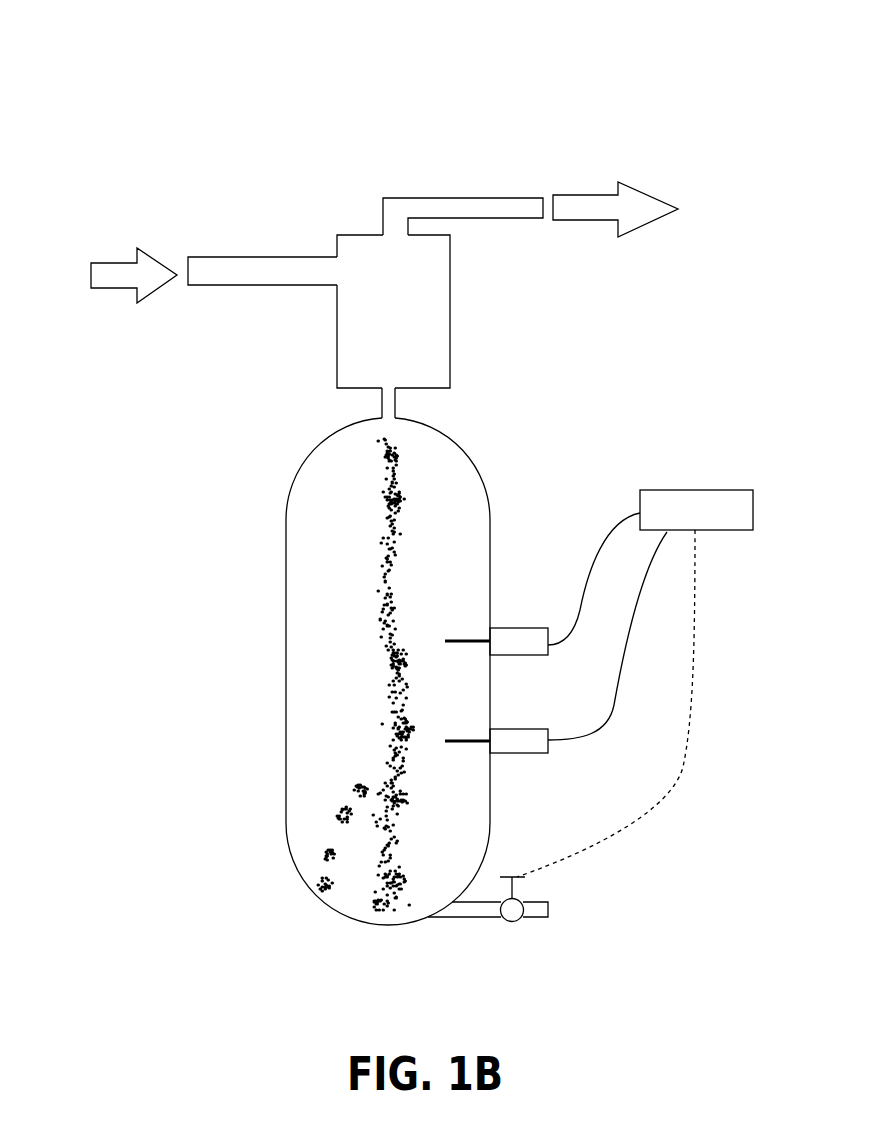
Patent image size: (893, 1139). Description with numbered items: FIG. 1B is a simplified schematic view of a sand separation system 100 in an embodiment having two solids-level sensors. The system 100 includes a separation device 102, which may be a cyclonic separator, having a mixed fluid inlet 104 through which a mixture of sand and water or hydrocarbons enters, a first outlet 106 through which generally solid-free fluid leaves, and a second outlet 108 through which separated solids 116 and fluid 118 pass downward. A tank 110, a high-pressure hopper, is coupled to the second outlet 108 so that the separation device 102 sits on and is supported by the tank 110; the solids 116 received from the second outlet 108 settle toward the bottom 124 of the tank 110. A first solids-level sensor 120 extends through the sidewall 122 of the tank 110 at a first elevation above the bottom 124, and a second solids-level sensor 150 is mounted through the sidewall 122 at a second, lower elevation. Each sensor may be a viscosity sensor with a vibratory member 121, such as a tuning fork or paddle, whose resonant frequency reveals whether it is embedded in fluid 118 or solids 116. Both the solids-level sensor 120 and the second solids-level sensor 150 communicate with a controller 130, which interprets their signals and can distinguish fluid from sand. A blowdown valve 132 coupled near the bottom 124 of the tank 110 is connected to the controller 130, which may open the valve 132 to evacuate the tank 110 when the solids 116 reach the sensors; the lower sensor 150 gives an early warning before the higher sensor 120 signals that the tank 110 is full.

The separation system 100 is at (137, 61).
The separation device 102 is at (447, 325).
The mixed fluid inlet 104 is at (200, 257).
The first outlet 106 is at (515, 197).
The second outlet 108 is at (382, 407).
The tank 110 is at (286, 568).
The solids 116 is at (366, 498).
The fluid 118 is at (298, 618).
The solids-level sensor 120 is at (513, 647).
The vibratory member 121 is at (468, 637).
The sidewall 122 is at (490, 802).
The bottom 124 is at (388, 925).
The controller 130 is at (697, 490).
The blowdown valve 132 is at (517, 883).
The second solids-level sensor 150 is at (548, 751).